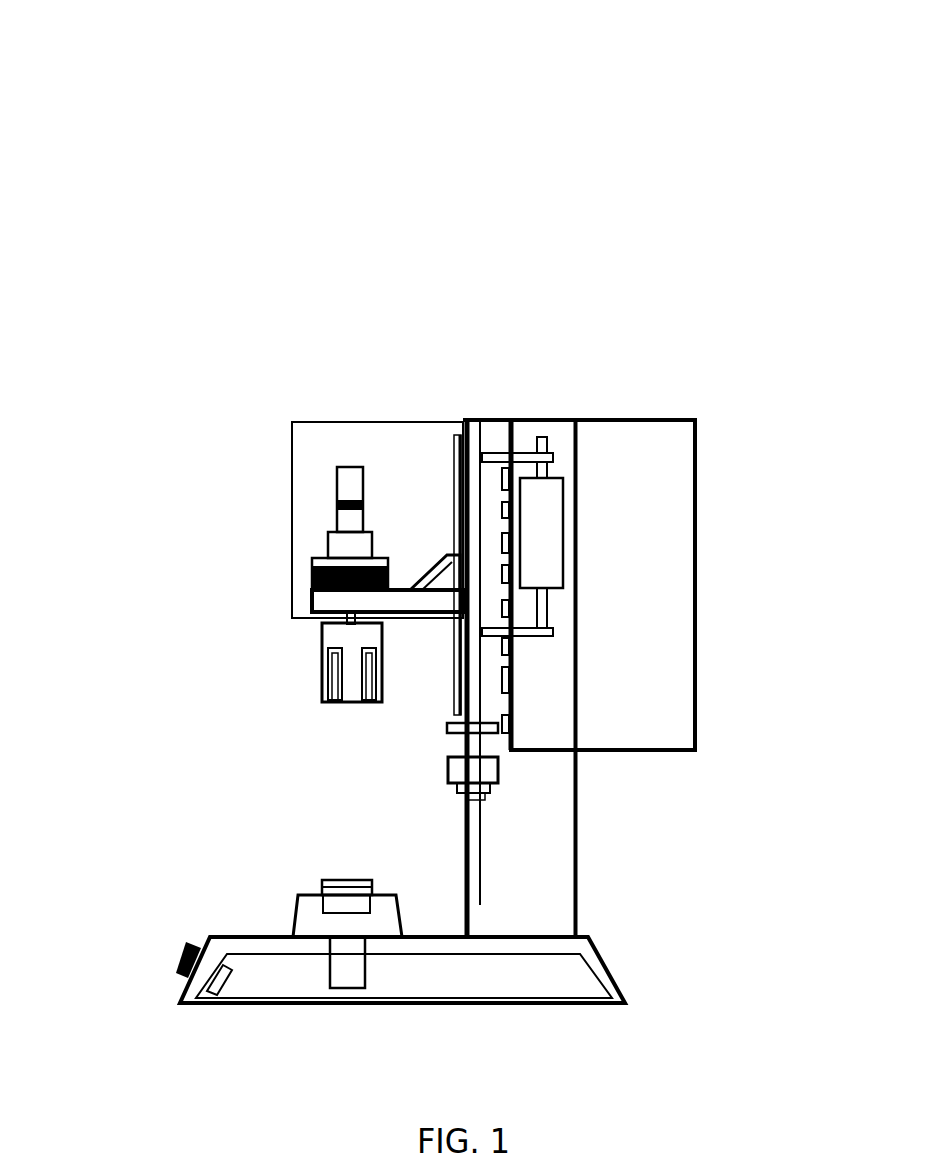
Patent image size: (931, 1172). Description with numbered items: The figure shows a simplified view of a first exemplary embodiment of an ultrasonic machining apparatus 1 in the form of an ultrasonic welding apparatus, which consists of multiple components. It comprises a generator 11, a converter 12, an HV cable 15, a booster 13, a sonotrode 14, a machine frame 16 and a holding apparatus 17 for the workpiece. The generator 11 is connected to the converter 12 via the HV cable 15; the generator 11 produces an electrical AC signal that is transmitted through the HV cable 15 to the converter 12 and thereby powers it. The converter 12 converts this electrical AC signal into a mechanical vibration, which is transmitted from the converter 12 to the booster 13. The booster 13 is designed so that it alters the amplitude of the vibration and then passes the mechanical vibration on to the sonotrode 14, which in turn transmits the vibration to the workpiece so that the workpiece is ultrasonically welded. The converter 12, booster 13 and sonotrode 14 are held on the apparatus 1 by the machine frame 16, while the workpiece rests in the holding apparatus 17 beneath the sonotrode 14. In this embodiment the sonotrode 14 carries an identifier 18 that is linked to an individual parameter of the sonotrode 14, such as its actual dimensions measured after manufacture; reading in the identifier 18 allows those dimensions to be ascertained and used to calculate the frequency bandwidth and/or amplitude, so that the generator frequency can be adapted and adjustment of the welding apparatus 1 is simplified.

The ultrasonic machining apparatus 1 is at (458, 262).
The generator 11 is at (628, 473).
The converter 12 is at (350, 477).
The booster 13 is at (330, 545).
The sonotrode 14 is at (323, 682).
The HV cable 15 is at (442, 553).
The machine frame 16 is at (557, 820).
The holding apparatus 17 is at (322, 926).
The identifier 18 is at (330, 638).